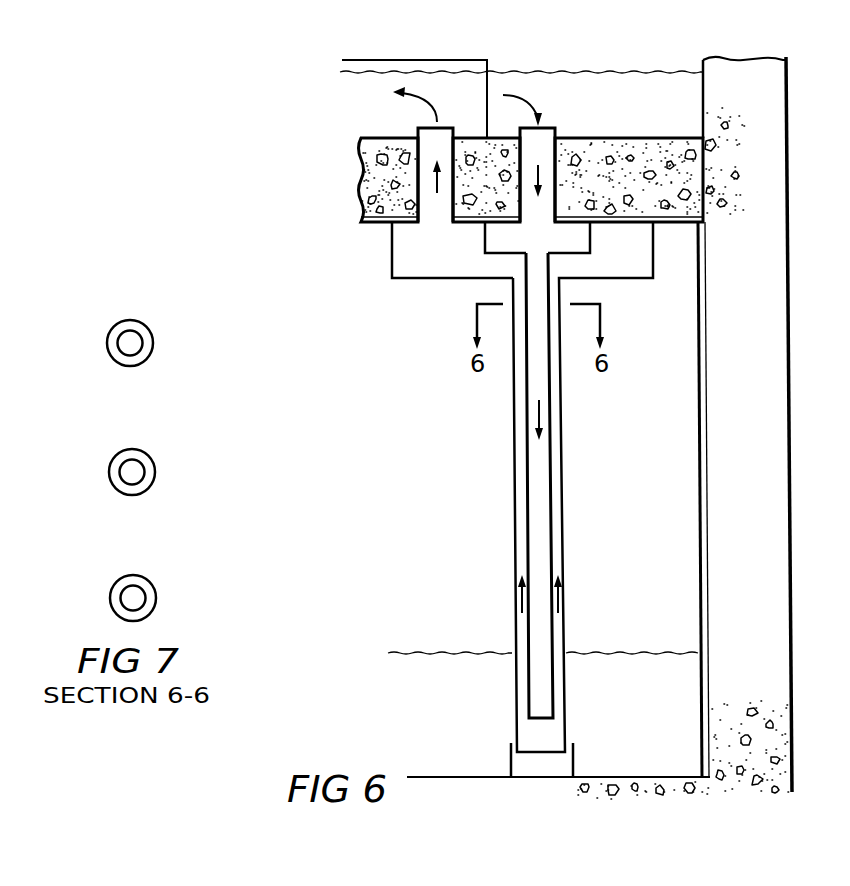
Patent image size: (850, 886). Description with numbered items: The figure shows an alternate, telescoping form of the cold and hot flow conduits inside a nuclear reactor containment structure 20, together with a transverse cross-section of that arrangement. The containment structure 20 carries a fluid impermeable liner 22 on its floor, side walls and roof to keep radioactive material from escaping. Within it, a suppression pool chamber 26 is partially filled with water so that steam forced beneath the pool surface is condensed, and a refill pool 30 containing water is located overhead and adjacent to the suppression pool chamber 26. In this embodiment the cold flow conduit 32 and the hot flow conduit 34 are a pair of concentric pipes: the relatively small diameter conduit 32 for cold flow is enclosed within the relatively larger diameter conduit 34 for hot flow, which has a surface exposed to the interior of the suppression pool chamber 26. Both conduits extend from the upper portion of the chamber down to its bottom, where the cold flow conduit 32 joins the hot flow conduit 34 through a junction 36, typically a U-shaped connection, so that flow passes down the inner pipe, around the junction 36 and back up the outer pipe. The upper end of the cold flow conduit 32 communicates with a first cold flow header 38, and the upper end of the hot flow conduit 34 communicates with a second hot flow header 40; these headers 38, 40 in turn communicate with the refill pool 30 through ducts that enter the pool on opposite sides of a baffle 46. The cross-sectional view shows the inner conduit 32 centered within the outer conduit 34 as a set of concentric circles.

In FIG. 6, the containment structure 20 is at (793, 457).
In FIG. 6, the fluid impermeable liner 22 is at (706, 357).
In FIG. 6, the suppression pool chamber 26 is at (398, 542).
In FIG. 6, the refill pool 30 is at (588, 72).
In FIG. 6, the cold flow conduit 32 is at (537, 463).
In FIG. 7, the cold flow conduit 32 is at (133, 470).
In FIG. 6, the hot flow conduit 34 is at (525, 557).
In FIG. 7, the hot flow conduit 34 is at (140, 487).
In FIG. 6, the junction 36 is at (523, 743).
In FIG. 6, the first cold flow header 38 is at (485, 250).
In FIG. 6, the second hot flow header 40 is at (392, 257).
In FIG. 6, the baffle 46 is at (372, 60).